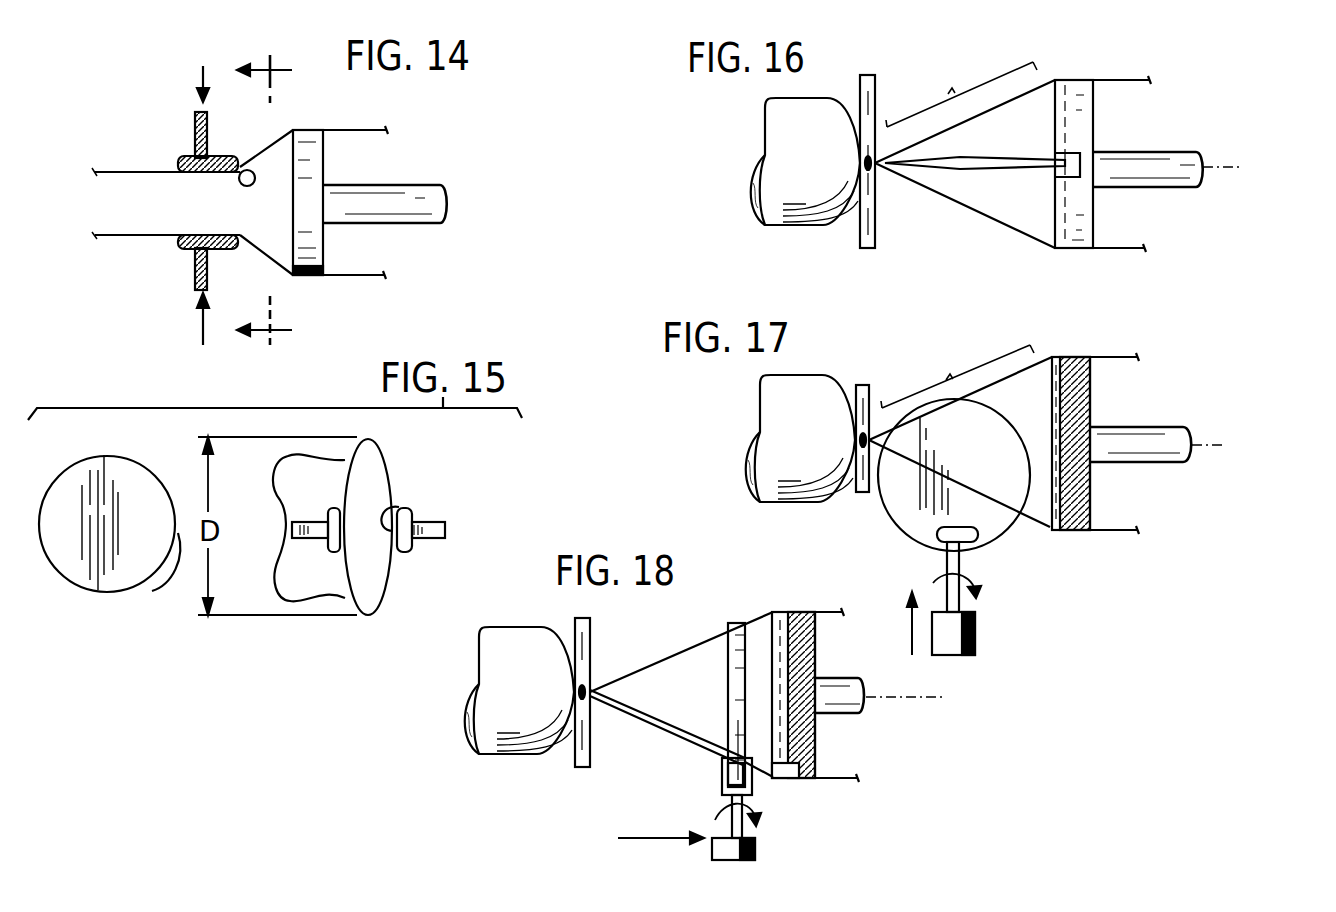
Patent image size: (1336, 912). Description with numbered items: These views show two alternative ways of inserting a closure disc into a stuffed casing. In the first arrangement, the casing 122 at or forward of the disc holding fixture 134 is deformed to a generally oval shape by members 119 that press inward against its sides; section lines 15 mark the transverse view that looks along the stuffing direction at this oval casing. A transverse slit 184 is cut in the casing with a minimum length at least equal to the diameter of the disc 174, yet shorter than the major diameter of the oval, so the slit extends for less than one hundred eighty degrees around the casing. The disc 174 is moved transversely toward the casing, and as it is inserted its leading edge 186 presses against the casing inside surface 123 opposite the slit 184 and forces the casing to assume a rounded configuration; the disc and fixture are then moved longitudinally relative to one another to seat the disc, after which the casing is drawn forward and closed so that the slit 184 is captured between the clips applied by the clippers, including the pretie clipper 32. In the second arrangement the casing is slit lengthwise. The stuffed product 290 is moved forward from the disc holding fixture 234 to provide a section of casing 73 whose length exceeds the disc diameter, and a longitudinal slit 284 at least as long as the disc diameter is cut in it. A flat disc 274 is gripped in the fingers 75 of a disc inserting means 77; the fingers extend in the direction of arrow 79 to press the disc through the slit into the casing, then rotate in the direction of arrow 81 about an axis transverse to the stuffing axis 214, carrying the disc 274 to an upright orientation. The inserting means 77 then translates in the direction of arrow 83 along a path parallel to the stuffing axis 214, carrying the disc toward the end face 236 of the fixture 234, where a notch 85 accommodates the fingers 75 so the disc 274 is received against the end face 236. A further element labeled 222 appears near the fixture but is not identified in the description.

In FIG. 14, the lines 15— 15 is at (271, 195).
In FIG. 14, the members 119 is at (196, 136).
In FIG. 15, the members 119 is at (308, 522).
In FIG. 14, the casing 122 is at (120, 168).
In FIG. 15, the casing 122 is at (380, 616).
In FIG. 14, the casing inside surface 123 is at (250, 170).
In FIG. 15, the casing inside surface 123 is at (396, 510).
In FIG. 14, the disc holding fixture 134 is at (328, 152).
In FIG. 14, the transverse slit 184 is at (240, 238).
In FIG. 15, the transverse slit 184 is at (280, 523).
In FIG. 15, the disc 174 is at (88, 462).
In FIG. 15, the leading edge 186 is at (146, 581).
In FIG. 16, the stuffed product 290 is at (779, 226).
In FIG. 17, the stuffed product 290 is at (798, 502).
In FIG. 18, the stuffed product 290 is at (524, 757).
In FIG. 16, the pretie clipper 32 is at (877, 91).
In FIG. 17, the pretie clipper 32 is at (871, 393).
In FIG. 18, the pretie clipper 32 is at (592, 651).
In FIG. 16, the section of casing 73 is at (961, 94).
In FIG. 17, the section of casing 73 is at (957, 371).
In FIG. 16, the disc holding fixture 234 is at (1102, 102).
In FIG. 17, the disc holding fixture 234 is at (1004, 443).
In FIG. 16, the stuffing axis 214 is at (1243, 165).
In FIG. 17, the stuffing axis 214 is at (1218, 448).
In FIG. 18, the stuffing axis 214 is at (905, 702).
In FIG. 16, the longitudinal slit 284 is at (968, 172).
In FIG. 17, the longitudinal slit 284 is at (1022, 515).
In FIG. 18, the longitudinal slit 284 is at (675, 735).
In FIG. 17, the flat disc 274 is at (885, 512).
In FIG. 18, the flat disc 274 is at (728, 663).
In FIG. 17, the fingers 75 is at (936, 524).
In FIG. 18, the fingers 75 is at (722, 772).
In FIG. 17, the disc inserting means 77 is at (976, 625).
In FIG. 18, the disc inserting means 77 is at (757, 849).
In FIG. 17, the arrow 79 is at (906, 622).
In FIG. 17, the arrow 81 is at (980, 580).
In FIG. 18, the arrow 81 is at (758, 813).
In FIG. 18, the arrow 83 is at (645, 840).
In FIG. 18, the notch 85 is at (788, 776).
In FIG. 18, the head bottom edge 222 is at (858, 780).
In FIG. 18, the end face 236 is at (774, 633).